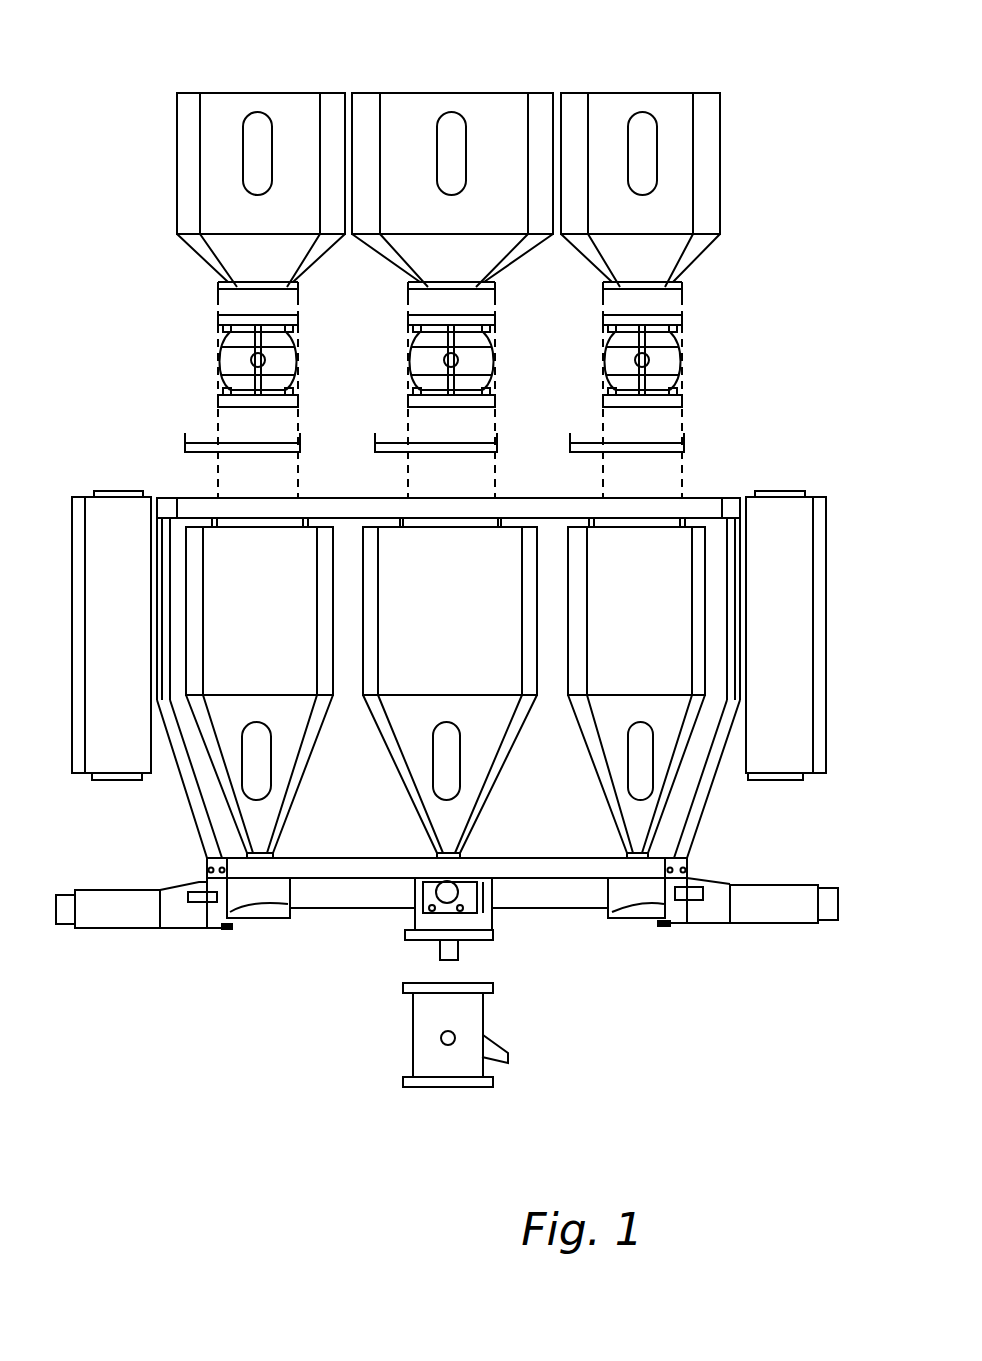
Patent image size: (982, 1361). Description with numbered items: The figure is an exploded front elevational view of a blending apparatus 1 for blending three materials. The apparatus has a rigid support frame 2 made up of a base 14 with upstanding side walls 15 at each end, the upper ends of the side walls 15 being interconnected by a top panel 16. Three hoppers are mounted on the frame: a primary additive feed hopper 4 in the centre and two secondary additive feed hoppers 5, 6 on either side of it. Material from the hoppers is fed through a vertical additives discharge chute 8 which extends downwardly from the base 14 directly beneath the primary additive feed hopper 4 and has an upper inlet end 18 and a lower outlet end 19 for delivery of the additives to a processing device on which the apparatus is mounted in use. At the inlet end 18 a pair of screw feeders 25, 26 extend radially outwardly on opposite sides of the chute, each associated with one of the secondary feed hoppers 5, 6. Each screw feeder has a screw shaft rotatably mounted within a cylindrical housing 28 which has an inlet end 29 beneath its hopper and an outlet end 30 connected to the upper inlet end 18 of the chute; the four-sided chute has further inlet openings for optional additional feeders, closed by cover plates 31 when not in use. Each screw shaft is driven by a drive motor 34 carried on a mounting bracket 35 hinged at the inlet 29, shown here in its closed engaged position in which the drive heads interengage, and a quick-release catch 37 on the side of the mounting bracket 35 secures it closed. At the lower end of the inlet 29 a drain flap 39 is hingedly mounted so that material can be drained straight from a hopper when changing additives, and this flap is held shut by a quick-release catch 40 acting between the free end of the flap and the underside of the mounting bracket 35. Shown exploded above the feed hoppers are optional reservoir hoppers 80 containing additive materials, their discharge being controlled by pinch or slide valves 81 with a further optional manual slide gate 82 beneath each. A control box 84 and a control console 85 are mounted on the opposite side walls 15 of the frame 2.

The blending apparatus 1 is at (792, 420).
The support frame 2 is at (712, 502).
The primary additive feed hopper 4 is at (422, 637).
The secondary additive feed hopper 5 is at (243, 637).
The secondary additive feed hopper 6 is at (625, 637).
The additives discharge chute 8 is at (396, 1035).
The base 14 is at (525, 865).
The side walls 15 is at (187, 793).
The top panel 16 is at (692, 497).
The upper inlet end 18 is at (480, 905).
The lower outlet end 19 is at (430, 1085).
The screw feeder 25 is at (325, 931).
The screw feeder 26 is at (567, 923).
The cylindrical housing 28 is at (347, 900).
The inlet end 29 is at (265, 887).
The outlet end 30 is at (392, 893).
The cover plates 31 is at (440, 912).
The drive motor 34 is at (121, 915).
The mounting bracket 35 is at (705, 923).
The quick-release catch 37 is at (690, 892).
The drain flap 39 is at (637, 923).
The quick-release catch 40 is at (665, 932).
The reservoir hoppers 80 is at (403, 110).
The pinch or slide valves 81 is at (300, 358).
The manual slide gate 82 is at (278, 438).
The control box 84 is at (807, 657).
The control console 85 is at (138, 657).